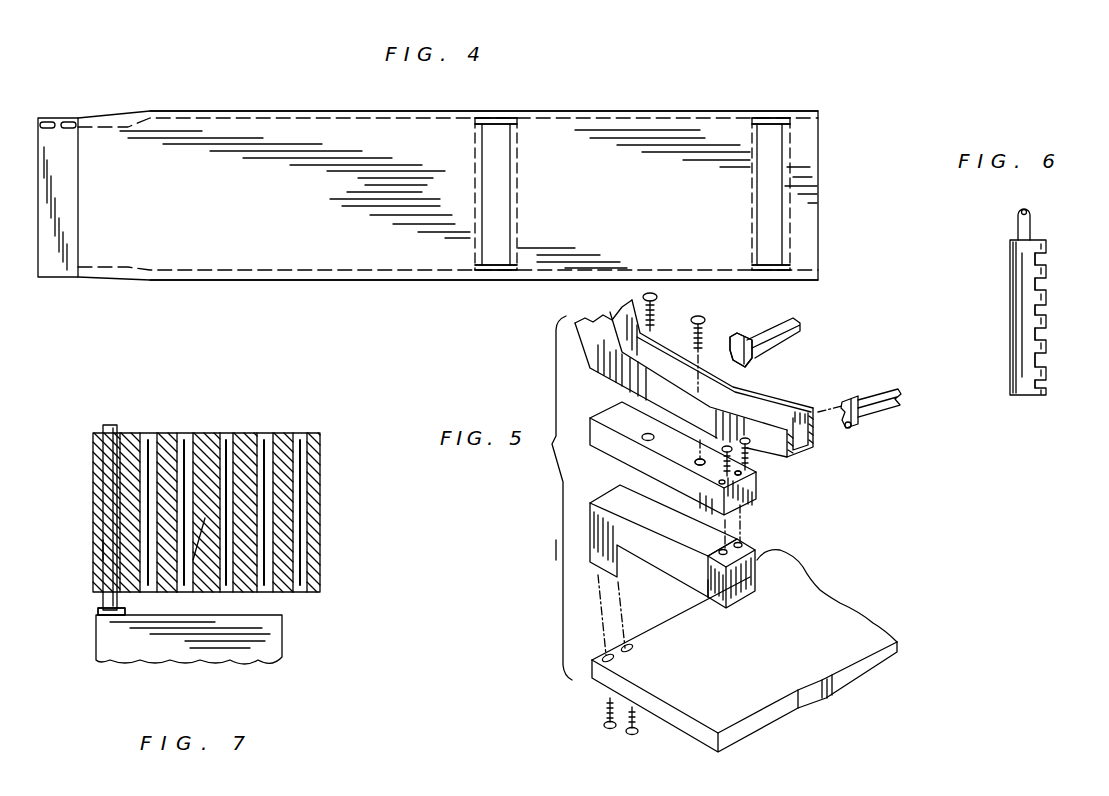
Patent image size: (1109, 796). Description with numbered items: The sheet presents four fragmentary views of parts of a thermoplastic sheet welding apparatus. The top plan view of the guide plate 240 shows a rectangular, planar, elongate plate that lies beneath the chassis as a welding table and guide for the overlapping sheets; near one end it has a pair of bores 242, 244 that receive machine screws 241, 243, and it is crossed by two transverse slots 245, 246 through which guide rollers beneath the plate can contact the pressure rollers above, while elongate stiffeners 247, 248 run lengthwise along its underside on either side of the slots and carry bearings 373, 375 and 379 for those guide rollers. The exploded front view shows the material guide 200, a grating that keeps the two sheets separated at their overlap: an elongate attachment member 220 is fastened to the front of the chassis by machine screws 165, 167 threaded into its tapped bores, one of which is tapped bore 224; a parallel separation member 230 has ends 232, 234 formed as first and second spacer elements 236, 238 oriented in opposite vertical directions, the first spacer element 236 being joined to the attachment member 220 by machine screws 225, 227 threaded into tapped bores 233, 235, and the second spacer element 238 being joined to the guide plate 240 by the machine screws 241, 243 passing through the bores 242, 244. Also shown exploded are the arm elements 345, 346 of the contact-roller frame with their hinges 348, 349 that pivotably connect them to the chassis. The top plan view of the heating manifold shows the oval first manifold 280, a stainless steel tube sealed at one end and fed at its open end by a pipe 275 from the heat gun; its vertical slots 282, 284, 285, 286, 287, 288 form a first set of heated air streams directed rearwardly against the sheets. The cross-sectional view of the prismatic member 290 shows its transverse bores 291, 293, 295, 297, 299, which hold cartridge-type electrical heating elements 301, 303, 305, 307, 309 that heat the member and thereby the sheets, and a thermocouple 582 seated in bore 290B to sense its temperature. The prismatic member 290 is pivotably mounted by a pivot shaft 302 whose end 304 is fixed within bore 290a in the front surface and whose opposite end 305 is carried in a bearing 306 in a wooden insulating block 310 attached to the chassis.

In FIG. 5, the machine screw 165 is at (654, 307).
In FIG. 5, the machine screw 167 is at (704, 324).
In FIG. 5, the material guide 200 is at (868, 557).
In FIG. 5, the attachment member 220 is at (645, 440).
In FIG. 5, the tapped bore 224 is at (695, 464).
In FIG. 5, the machine screw 225 is at (745, 452).
In FIG. 5, the machine screw 227 is at (760, 474).
In FIG. 5, the separation member 230 is at (672, 578).
In FIG. 5, the end of separation member 232 is at (583, 520).
In FIG. 5, the tapped bore 233 is at (760, 516).
In FIG. 5, the end of separation member 234 is at (712, 606).
In FIG. 5, the tapped bore 235 is at (757, 490).
In FIG. 5, the first spacer element 236 is at (742, 577).
In FIG. 5, the second spacer element 238 is at (583, 554).
In FIG. 4, the guide plate 240 is at (270, 95).
In FIG. 5, the guide plate 240 is at (858, 667).
In FIG. 5, the machine screw 241 is at (605, 707).
In FIG. 4, the bore 242 is at (48, 121).
In FIG. 5, the bore 242 is at (600, 660).
In FIG. 5, the machine screw 243 is at (627, 730).
In FIG. 4, the bore 244 is at (70, 121).
In FIG. 5, the bore 244 is at (620, 650).
In FIG. 4, the slot 245 is at (500, 175).
In FIG. 4, the slot 246 is at (778, 150).
In FIG. 4, the stiffener 247 is at (405, 282).
In FIG. 4, the stiffener 248 is at (560, 117).
In FIG. 6, the pipe 275 is at (1033, 223).
In FIG. 6, the first manifold 280 is at (1008, 313).
In FIG. 6, the vertical slot 282 is at (1048, 255).
In FIG. 6, the vertical slot 284 is at (1048, 280).
In FIG. 6, the vertical slot 285 is at (1048, 306).
In FIG. 6, the vertical slot 286 is at (1048, 330).
In FIG. 6, the vertical slot 287 is at (1048, 356).
In FIG. 6, the vertical slot 288 is at (1048, 382).
In FIG. 7, the prismatic member 290 is at (330, 498).
In FIG. 7, the bore 290a is at (118, 440).
In FIG. 7, the bore 290B is at (207, 432).
In FIG. 7, the bore 291 is at (137, 432).
In FIG. 7, the bore 293 is at (185, 432).
In FIG. 7, the bore 295 is at (220, 440).
In FIG. 7, the bore 297 is at (260, 434).
In FIG. 7, the bore 299 is at (306, 434).
In FIG. 7, the cartridge-type electrical heating element 301 is at (150, 582).
In FIG. 7, the pivot shaft 302 is at (100, 546).
In FIG. 7, the cartridge-type electrical heating element 303 is at (183, 580).
In FIG. 7, the end of pivot shaft 304 is at (110, 497).
In FIG. 7, the cartridge-type electrical heating element 305 is at (227, 580).
In FIG. 7, the bearing 306 is at (96, 614).
In FIG. 7, the cartridge-type electrical heating element 307 is at (267, 587).
In FIG. 7, the cartridge-type electrical heating element 309 is at (303, 592).
In FIG. 7, the insulating block 310 is at (148, 648).
In FIG. 5, the arm element 345 is at (795, 338).
In FIG. 5, the arm element 346 is at (868, 414).
In FIG. 5, the hinge 348 is at (745, 366).
In FIG. 5, the hinge 349 is at (847, 430).
In FIG. 4, the bearing 373 is at (492, 270).
In FIG. 4, the bearing 375 is at (490, 122).
In FIG. 4, the bearing 379 is at (770, 120).
In FIG. 7, the thermocouple 582 is at (205, 518).